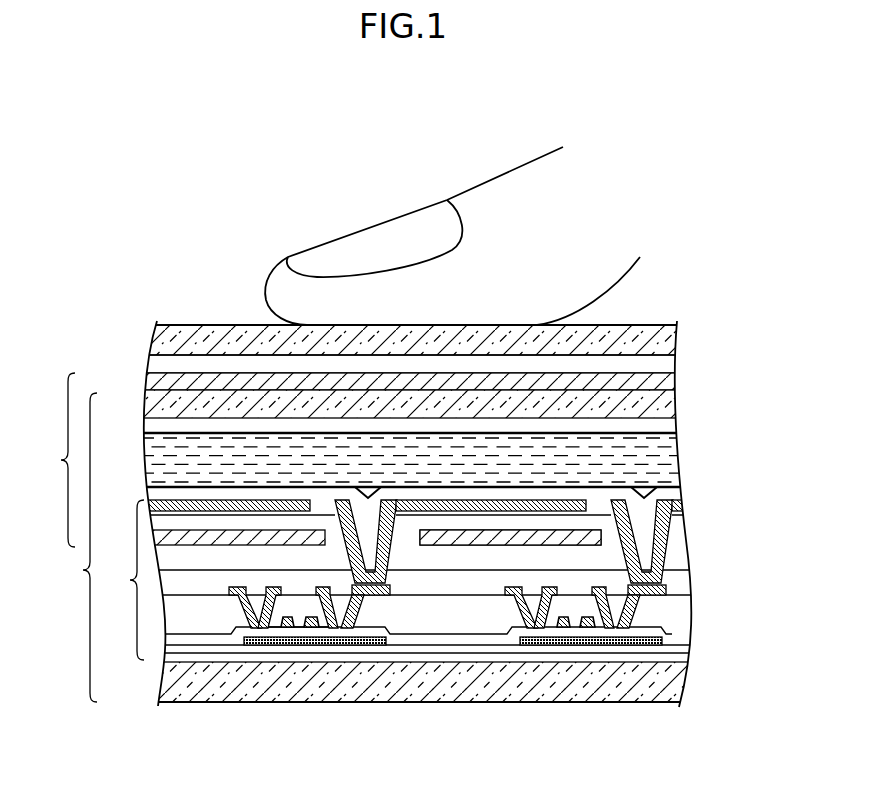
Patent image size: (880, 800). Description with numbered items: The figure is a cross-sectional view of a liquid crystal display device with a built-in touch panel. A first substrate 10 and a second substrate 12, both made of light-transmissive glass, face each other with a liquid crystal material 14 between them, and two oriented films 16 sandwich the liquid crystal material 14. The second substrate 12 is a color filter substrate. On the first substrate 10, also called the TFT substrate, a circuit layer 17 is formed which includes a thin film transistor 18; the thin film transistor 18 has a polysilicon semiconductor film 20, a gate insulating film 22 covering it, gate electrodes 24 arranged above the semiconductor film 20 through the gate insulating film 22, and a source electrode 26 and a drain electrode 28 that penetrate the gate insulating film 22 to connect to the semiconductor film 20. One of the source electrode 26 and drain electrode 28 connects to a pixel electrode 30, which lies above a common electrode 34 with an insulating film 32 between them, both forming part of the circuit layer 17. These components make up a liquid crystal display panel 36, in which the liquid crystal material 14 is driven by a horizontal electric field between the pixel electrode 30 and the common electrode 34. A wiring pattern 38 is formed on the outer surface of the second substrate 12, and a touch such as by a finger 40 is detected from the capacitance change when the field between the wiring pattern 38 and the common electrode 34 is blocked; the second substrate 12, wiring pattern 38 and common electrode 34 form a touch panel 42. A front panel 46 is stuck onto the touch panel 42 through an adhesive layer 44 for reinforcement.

The first substrate 10 is at (681, 692).
The second substrate 12 is at (658, 405).
The liquid crystal material 14 is at (668, 458).
The oriented film 16 is at (663, 425).
The circuit layer 17 is at (121, 580).
The thin film transistor 18 is at (410, 645).
The semiconductor film 20 is at (338, 630).
The gate insulating film 22 is at (292, 627).
The gate electrodes 24 is at (283, 627).
The source electrode 26 is at (372, 618).
The drain electrode 28 is at (248, 608).
The pixel electrode 30 is at (520, 497).
The insulating film 32 is at (605, 520).
The common electrode 34 is at (492, 542).
The liquid crystal display panel 36 is at (71, 547).
The wiring pattern 38 is at (658, 385).
The finger 40 is at (487, 197).
The touch panel 42 is at (49, 460).
The adhesive layer 44 is at (658, 363).
The front panel 46 is at (665, 342).